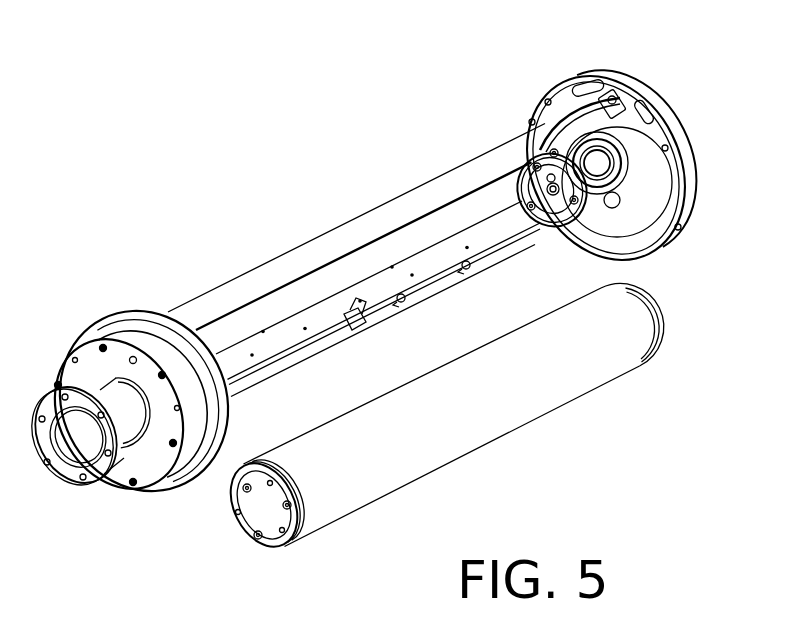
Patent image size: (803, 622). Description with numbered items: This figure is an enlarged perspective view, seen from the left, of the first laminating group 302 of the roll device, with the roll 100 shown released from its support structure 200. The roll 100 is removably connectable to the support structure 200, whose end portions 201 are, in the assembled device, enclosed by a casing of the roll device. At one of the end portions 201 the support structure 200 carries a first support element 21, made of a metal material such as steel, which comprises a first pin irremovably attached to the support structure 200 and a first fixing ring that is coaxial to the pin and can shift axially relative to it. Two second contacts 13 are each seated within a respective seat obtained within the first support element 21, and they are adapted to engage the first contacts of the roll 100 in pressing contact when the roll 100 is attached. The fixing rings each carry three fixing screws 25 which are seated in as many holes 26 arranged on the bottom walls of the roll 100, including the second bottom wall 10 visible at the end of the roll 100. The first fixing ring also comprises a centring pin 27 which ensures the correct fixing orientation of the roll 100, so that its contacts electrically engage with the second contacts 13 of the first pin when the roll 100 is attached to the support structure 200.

The second bottom wall 10 is at (262, 518).
The second contact 13 is at (556, 150).
The first support element 21 is at (588, 192).
The fixing screw 25 is at (535, 170).
The hole 26 is at (236, 515).
The centring pin 27 is at (554, 148).
The roll 100 is at (545, 428).
The support structure 200 is at (388, 198).
The end portion 201 is at (133, 306).
The first laminating group 302 is at (729, 421).